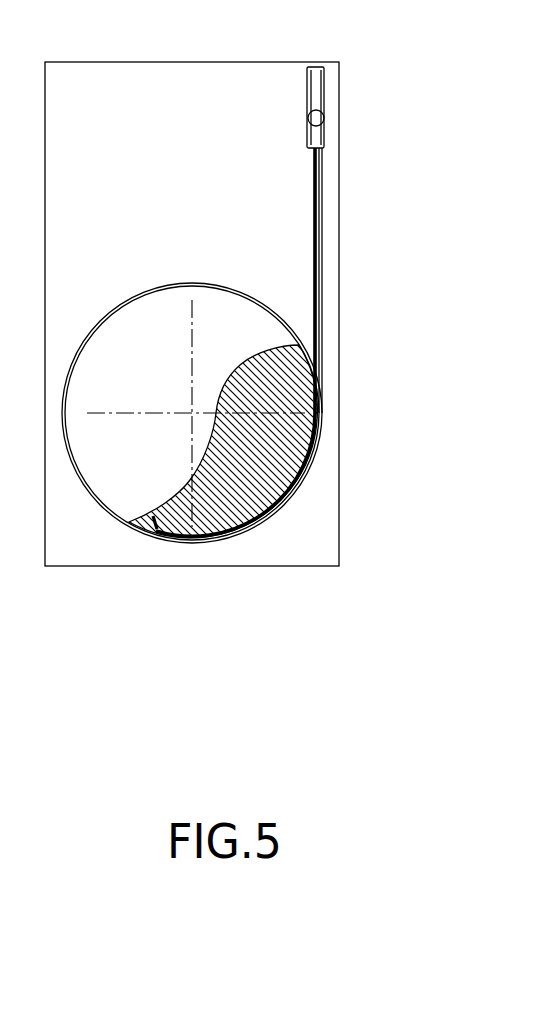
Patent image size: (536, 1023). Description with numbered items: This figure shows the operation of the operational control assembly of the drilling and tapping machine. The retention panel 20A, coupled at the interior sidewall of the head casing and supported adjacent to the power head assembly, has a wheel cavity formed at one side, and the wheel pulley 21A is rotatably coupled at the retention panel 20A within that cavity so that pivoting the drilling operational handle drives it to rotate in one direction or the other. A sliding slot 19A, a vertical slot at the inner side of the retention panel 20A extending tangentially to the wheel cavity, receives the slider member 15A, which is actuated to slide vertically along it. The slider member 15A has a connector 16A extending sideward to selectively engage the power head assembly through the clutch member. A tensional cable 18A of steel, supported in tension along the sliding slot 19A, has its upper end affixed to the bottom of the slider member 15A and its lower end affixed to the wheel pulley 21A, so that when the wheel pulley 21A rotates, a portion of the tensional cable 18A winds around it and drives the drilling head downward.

The slider member 15A is at (317, 93).
The connector 16A is at (317, 117).
The sliding slot 19A is at (319, 190).
The tensional cable 18A is at (319, 242).
The wheel pulley 21A is at (295, 390).
The retention panel 20A is at (320, 483).